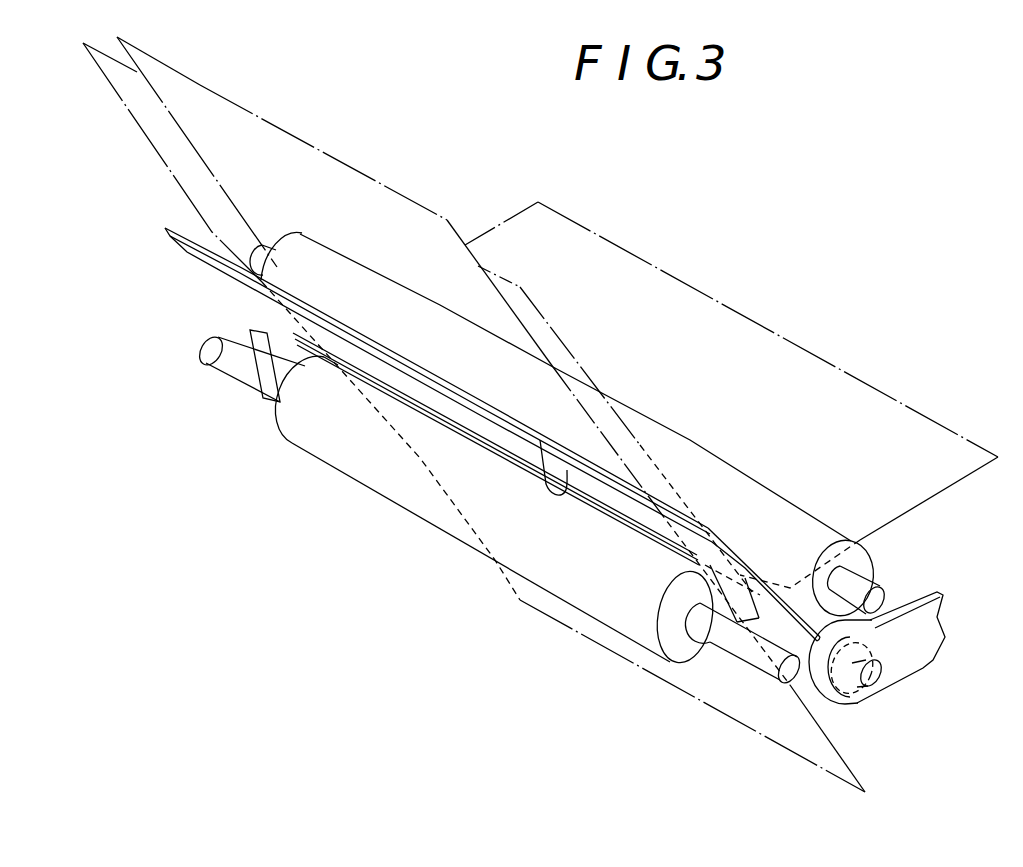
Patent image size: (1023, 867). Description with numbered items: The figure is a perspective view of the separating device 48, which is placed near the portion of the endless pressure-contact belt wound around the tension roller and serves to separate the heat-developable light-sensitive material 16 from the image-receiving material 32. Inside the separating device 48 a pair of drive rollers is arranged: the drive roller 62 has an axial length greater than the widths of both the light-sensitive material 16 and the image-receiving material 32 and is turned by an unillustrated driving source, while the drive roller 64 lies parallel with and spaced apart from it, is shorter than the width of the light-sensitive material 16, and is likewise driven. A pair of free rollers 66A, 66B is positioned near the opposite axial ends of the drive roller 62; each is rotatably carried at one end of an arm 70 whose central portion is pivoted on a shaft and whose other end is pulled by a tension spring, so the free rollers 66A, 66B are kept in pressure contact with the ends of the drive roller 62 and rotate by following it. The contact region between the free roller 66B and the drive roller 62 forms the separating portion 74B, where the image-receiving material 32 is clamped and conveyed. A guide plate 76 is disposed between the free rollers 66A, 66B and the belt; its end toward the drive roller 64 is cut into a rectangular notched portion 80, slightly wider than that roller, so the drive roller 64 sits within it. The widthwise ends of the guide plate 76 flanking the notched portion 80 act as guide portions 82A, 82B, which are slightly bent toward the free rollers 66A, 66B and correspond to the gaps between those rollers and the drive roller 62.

The heat-developable light-sensitive material 16 is at (813, 767).
The image-receiving material 32 is at (870, 385).
The separating device 48 is at (150, 341).
The drive roller 62 is at (690, 446).
The drive roller 64 is at (397, 507).
The free roller 66A is at (225, 370).
The free roller 66B is at (828, 700).
The arm 70 is at (923, 668).
The separating portion 74B is at (823, 620).
The guide plate 76 is at (203, 277).
The notched portion 80 is at (540, 440).
The guide portion 82A is at (258, 392).
The guide portion 82B is at (737, 665).